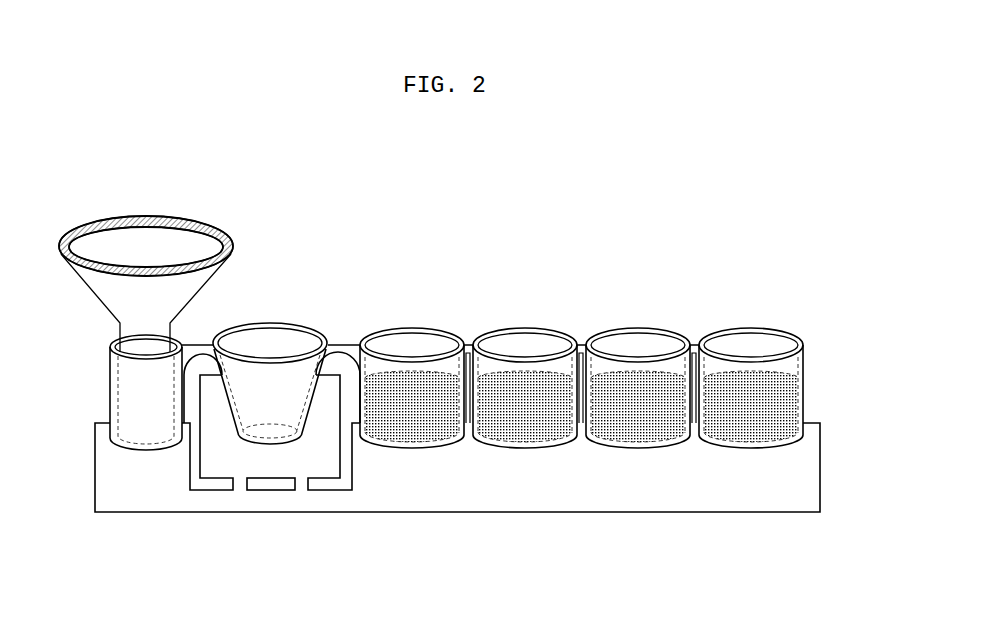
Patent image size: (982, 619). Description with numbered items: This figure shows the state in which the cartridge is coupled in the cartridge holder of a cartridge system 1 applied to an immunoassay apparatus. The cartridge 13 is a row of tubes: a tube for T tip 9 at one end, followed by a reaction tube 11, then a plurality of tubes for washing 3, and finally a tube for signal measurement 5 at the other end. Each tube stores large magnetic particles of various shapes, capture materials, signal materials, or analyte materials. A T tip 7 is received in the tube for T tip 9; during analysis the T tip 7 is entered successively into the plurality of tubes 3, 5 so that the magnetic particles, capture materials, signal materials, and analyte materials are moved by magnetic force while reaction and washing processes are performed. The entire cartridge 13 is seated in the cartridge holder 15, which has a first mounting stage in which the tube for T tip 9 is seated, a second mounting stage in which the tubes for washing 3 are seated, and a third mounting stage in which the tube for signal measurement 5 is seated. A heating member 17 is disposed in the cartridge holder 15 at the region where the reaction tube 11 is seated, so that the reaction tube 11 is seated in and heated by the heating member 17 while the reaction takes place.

The cartridge system 1 is at (480, 178).
The tubes for washing 3 is at (585, 340).
The tube for signal measurement 5 is at (748, 340).
The T tip 7 is at (77, 210).
The tube for T tip 9 is at (110, 388).
The reaction tube 11 is at (270, 337).
The cartridge 13 is at (803, 316).
The cartridge holder 15 is at (741, 517).
The heating member 17 is at (270, 465).